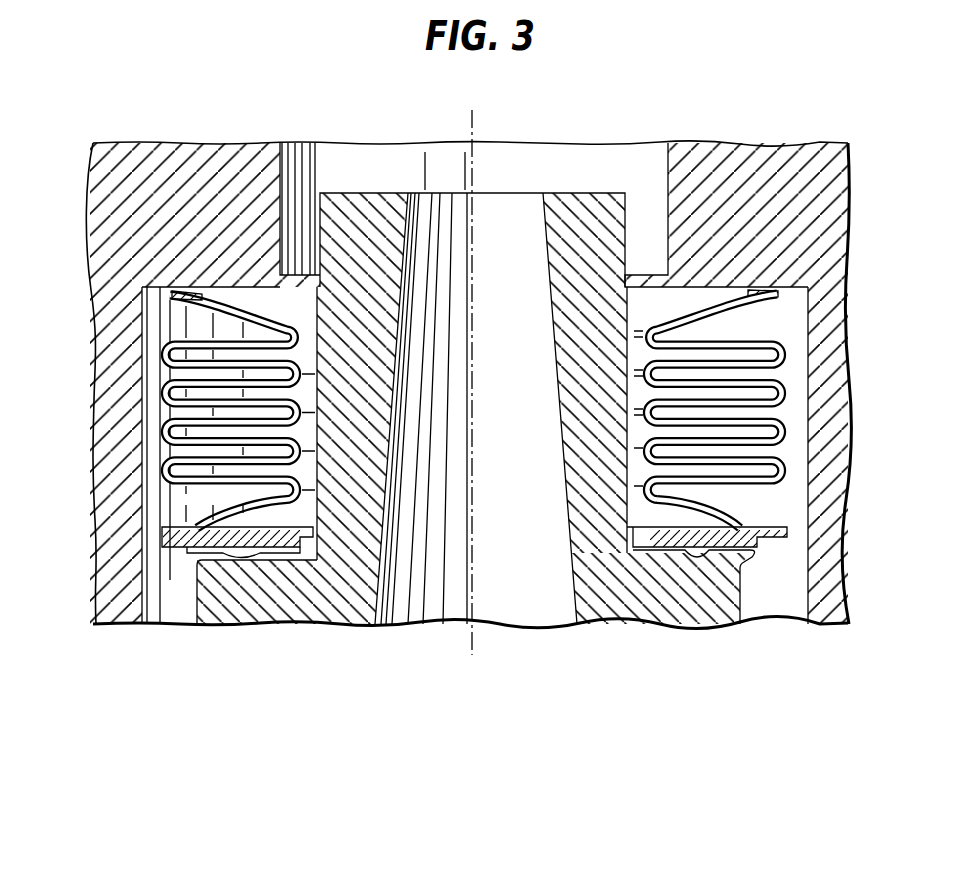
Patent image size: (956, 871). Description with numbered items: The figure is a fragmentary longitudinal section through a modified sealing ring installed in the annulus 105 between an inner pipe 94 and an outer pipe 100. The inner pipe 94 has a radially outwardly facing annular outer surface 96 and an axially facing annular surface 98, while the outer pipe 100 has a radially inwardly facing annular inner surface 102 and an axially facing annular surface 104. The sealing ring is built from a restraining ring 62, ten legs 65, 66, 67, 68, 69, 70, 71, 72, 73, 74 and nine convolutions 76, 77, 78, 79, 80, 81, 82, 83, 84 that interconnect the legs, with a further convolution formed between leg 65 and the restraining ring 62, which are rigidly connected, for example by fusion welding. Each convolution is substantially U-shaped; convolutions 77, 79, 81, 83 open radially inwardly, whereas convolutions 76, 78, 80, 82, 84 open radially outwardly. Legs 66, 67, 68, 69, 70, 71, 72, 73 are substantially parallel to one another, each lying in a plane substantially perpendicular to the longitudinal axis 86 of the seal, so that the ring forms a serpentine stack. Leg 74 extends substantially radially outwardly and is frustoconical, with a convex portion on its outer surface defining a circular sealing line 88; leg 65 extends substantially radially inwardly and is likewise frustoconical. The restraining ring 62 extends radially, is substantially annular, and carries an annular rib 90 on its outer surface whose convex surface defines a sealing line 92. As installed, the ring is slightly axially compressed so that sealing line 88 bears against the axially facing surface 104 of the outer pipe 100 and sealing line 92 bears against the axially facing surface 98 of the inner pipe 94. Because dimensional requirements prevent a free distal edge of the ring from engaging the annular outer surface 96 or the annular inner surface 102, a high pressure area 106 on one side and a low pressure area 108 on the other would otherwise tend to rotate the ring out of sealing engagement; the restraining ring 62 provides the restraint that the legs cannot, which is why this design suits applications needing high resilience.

The outer pipe 100 is at (196, 130).
The inner pipe 94 is at (345, 178).
The annular outer surface 96 is at (314, 150).
The longitudinal axis 86 is at (474, 173).
The low pressure area 108 is at (609, 144).
The annular inner surface 102 is at (142, 290).
The axially facing annular surface 104 is at (162, 290).
The annulus 105 is at (158, 326).
The axially facing annular surface 98 is at (282, 547).
The high pressure area 106 is at (172, 602).
The circular sealing line 88 is at (768, 276).
The leg 74 is at (683, 323).
The convolution 84 is at (665, 340).
The convolution 83 is at (790, 350).
The leg 73 is at (665, 353).
The convolution 82 is at (665, 365).
The leg 71 is at (790, 371).
The leg 72 is at (665, 381).
The convolution 80 is at (665, 398).
The convolution 81 is at (790, 392).
The leg 69 is at (665, 418).
The leg 68 is at (665, 440).
The leg 70 is at (790, 407).
The convolution 78 is at (665, 457).
The convolution 76 is at (645, 492).
The convolution 79 is at (805, 423).
The leg 67 is at (785, 447).
The convolution 77 is at (790, 478).
The leg 66 is at (757, 482).
The leg 65 is at (735, 528).
The restraining ring 62 is at (756, 553).
The sealing line 92 is at (703, 565).
The annular rib 90 is at (690, 568).